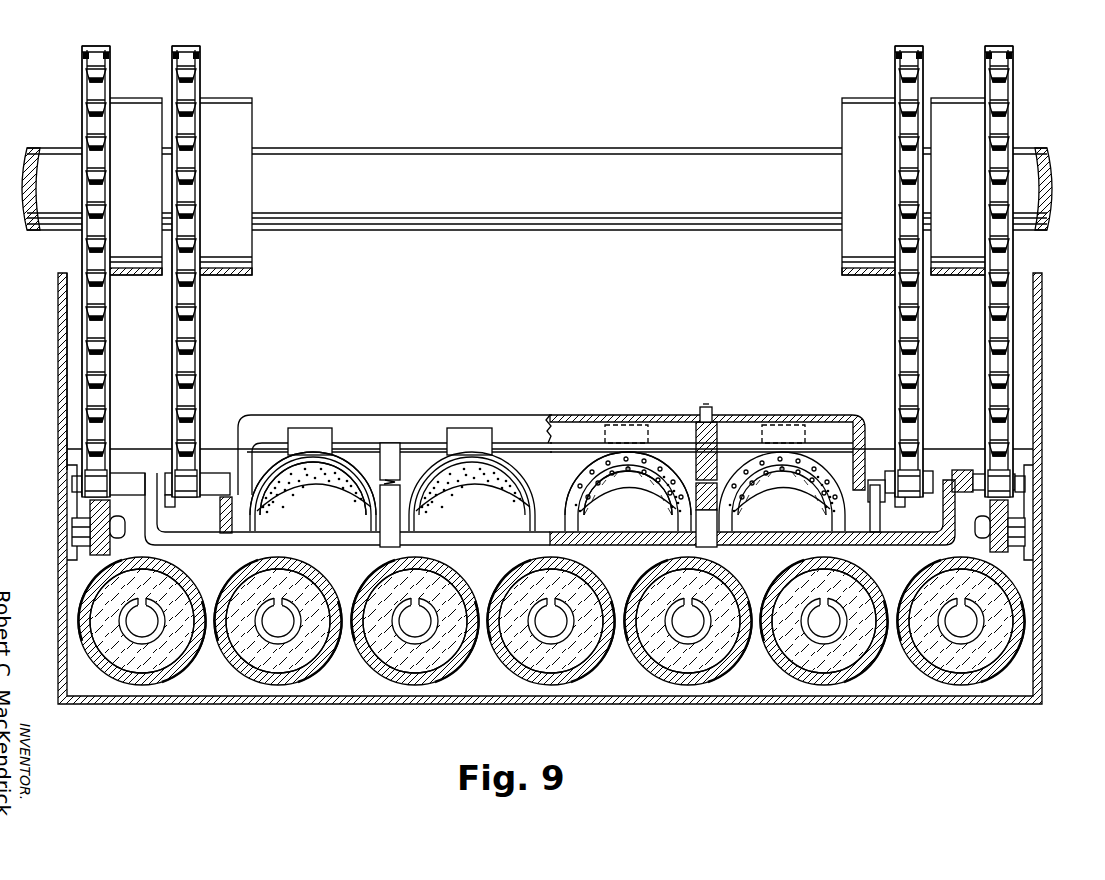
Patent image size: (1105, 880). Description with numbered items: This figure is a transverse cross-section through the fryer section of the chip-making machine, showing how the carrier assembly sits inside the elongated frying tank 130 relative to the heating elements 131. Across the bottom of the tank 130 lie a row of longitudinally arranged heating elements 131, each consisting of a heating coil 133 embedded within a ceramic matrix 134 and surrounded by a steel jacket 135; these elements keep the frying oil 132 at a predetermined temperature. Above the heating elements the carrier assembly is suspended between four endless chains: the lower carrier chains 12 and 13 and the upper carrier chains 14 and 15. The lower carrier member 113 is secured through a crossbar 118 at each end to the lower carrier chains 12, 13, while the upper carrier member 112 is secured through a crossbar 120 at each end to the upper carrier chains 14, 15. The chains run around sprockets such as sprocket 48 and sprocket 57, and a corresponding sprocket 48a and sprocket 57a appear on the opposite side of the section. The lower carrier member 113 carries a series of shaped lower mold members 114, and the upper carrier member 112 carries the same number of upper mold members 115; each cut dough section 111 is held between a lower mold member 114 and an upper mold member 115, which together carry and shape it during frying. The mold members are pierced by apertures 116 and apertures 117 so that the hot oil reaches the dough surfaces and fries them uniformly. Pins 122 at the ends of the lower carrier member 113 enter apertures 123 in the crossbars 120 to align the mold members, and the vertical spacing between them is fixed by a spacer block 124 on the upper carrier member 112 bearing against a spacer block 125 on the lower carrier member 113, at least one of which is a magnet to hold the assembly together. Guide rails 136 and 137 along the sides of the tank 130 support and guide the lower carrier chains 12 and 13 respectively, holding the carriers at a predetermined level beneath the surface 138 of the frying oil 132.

The endless chain 12 is at (76, 479).
The endless chain 13 is at (1020, 478).
The upper carrier chain 14 is at (170, 496).
The endless chain 15 is at (903, 487).
The sprocket 48 is at (90, 92).
The conveyor chain 48a is at (1000, 65).
The sprocket 57 is at (186, 100).
The conveyor chain 57a is at (905, 65).
The cut dough section 111 is at (318, 455).
The upper carrier member 112 is at (272, 432).
The lower carrier member 113 is at (180, 545).
The lower mold member 114 is at (310, 490).
The upper mold member 115 is at (342, 462).
The aperture 116 is at (465, 488).
The aperture 117 is at (600, 440).
The crossbar 118 is at (128, 480).
The crossbar 120 is at (218, 480).
The pin 122 is at (228, 505).
The aperture 123 is at (888, 470).
The spacer block 124 is at (393, 460).
The spacer block 125 is at (392, 540).
The tank 130 is at (1068, 574).
The heating element 131 is at (795, 679).
The frying oil 132 is at (527, 690).
The heating coil 133 is at (826, 641).
The ceramic matrix 134 is at (863, 640).
The steel jacket 135 is at (883, 637).
The guide rail 136 is at (95, 510).
The guide rail 137 is at (1012, 510).
The surface 138 is at (73, 450).